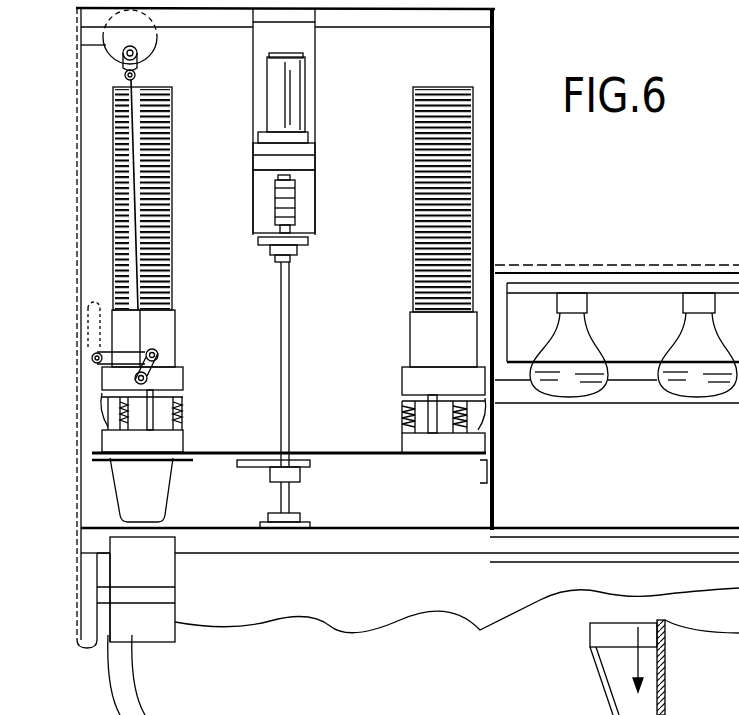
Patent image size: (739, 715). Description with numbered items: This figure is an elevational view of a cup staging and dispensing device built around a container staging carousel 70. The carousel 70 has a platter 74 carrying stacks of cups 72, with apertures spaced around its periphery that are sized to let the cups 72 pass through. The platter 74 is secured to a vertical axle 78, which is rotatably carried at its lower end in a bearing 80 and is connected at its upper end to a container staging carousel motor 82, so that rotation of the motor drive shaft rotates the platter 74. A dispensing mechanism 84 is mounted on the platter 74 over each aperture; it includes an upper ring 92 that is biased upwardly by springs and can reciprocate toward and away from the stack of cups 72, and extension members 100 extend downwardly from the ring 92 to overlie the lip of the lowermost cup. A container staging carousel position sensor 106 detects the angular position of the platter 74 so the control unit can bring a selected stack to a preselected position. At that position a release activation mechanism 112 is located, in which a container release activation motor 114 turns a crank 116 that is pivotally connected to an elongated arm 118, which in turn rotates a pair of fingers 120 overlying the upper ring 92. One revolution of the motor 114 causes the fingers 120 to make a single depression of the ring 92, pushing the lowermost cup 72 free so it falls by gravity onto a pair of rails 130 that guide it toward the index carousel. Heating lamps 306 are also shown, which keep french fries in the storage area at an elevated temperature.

The container staging carousel 70 is at (313, 290).
The cup 72 is at (160, 498).
The platter 74 is at (328, 453).
The vertical axle 78 is at (283, 355).
The bearing 80 is at (292, 508).
The container staging carousel motor 82 is at (294, 82).
The dispensing mechanism 84 is at (392, 380).
The upper ring 92 is at (172, 382).
The extension member 100 is at (608, 700).
The container staging carousel position sensor 106 is at (487, 477).
The release activation mechanism 112 is at (119, 54).
The container release activation motor 114 is at (107, 47).
The crank 116 is at (118, 73).
The elongated arm 118 is at (112, 323).
The fingers 120 is at (97, 345).
The rails 130 is at (123, 707).
The heating lamps 306 is at (703, 386).